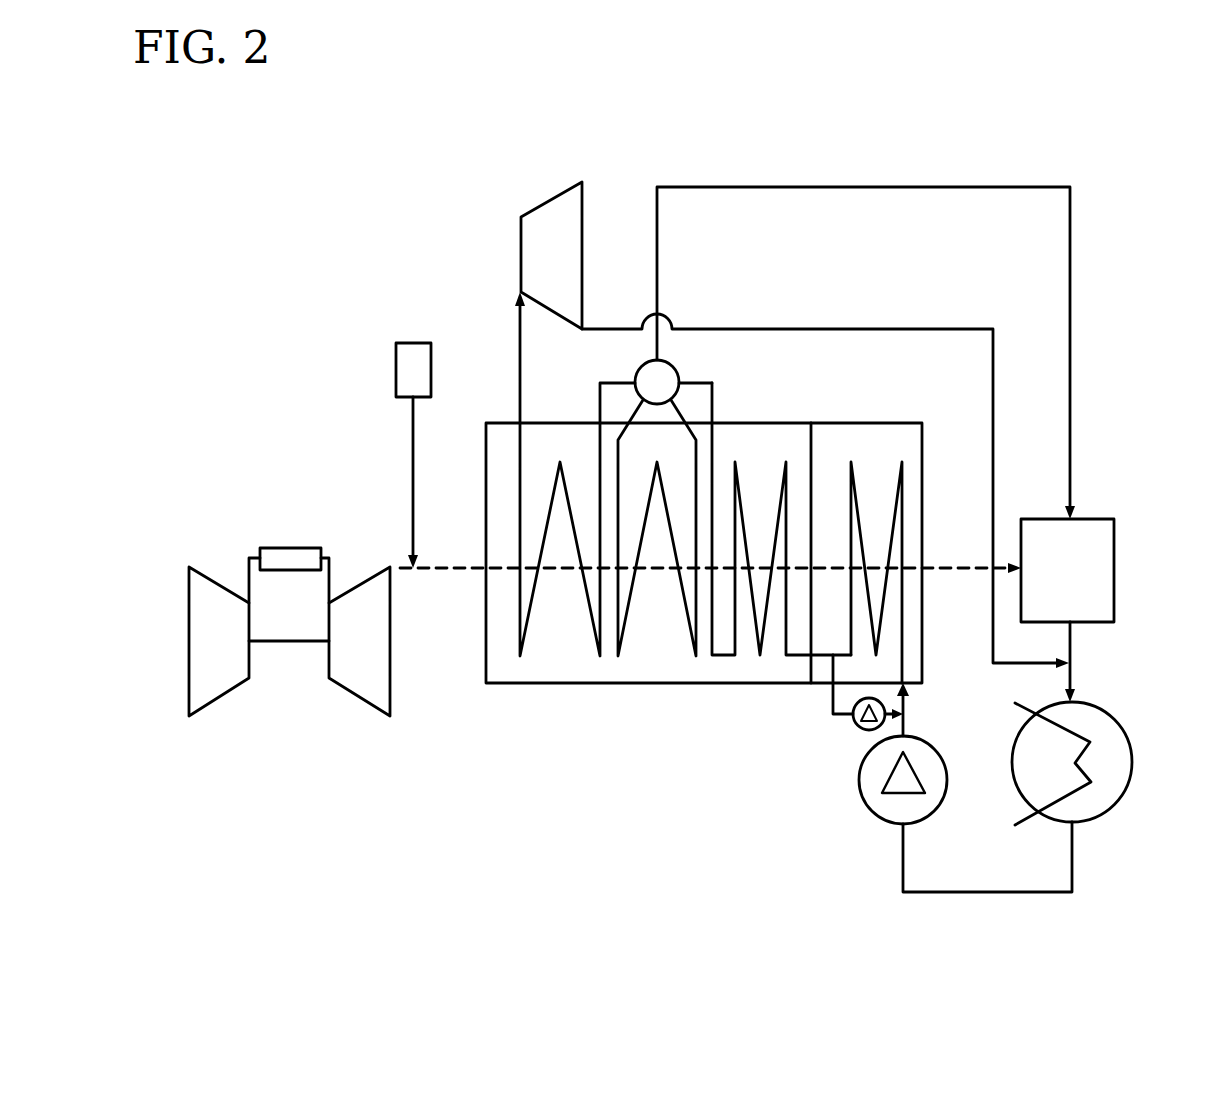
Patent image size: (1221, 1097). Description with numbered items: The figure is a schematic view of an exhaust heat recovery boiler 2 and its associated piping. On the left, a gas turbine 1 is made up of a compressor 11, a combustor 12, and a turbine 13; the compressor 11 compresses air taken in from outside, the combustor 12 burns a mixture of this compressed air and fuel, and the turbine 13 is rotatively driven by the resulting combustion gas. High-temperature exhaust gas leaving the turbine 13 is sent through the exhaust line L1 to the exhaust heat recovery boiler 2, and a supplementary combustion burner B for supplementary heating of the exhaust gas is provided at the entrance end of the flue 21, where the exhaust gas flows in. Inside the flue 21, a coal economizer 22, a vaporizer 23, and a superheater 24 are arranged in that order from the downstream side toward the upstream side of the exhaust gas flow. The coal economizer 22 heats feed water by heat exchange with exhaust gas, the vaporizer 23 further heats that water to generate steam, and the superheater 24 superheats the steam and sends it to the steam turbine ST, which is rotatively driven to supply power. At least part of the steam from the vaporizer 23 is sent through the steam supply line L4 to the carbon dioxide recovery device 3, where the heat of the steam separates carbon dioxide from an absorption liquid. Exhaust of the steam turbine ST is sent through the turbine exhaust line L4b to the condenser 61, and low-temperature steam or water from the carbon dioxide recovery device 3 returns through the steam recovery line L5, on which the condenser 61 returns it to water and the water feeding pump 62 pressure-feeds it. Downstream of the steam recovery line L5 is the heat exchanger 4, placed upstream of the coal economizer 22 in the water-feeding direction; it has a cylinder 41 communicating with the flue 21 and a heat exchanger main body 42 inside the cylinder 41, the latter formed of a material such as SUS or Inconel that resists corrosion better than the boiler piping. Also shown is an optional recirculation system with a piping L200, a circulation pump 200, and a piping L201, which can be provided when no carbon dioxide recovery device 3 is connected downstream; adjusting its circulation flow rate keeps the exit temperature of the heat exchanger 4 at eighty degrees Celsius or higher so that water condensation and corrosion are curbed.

The exhaust heat recovery boiler 2 is at (435, 152).
The gas turbine 1 is at (293, 639).
The compressor 11 is at (208, 577).
The combustor 12 is at (285, 548).
The turbine 13 is at (358, 578).
The exhaust line L1 is at (452, 563).
The supplementary combustion burner B is at (396, 368).
The steam turbine ST is at (553, 193).
The flue 21 is at (558, 684).
The superheater 24 is at (518, 460).
The vaporizer 23 is at (712, 405).
The coal economizer 22 is at (787, 445).
The heat exchanger 4 is at (898, 522).
The cylinder 41 is at (867, 423).
The heat exchanger main body 42 is at (903, 505).
The piping L200 is at (828, 698).
The circulation pump 200 is at (852, 727).
The piping L201 is at (903, 713).
The water feeding pump 62 is at (860, 790).
The condenser 61 is at (1122, 800).
The carbon dioxide recovery device 3 is at (1095, 519).
The steam supply line L4 is at (755, 187).
The turbine exhaust line L4b is at (813, 329).
The steam recovery line L5 is at (1073, 680).